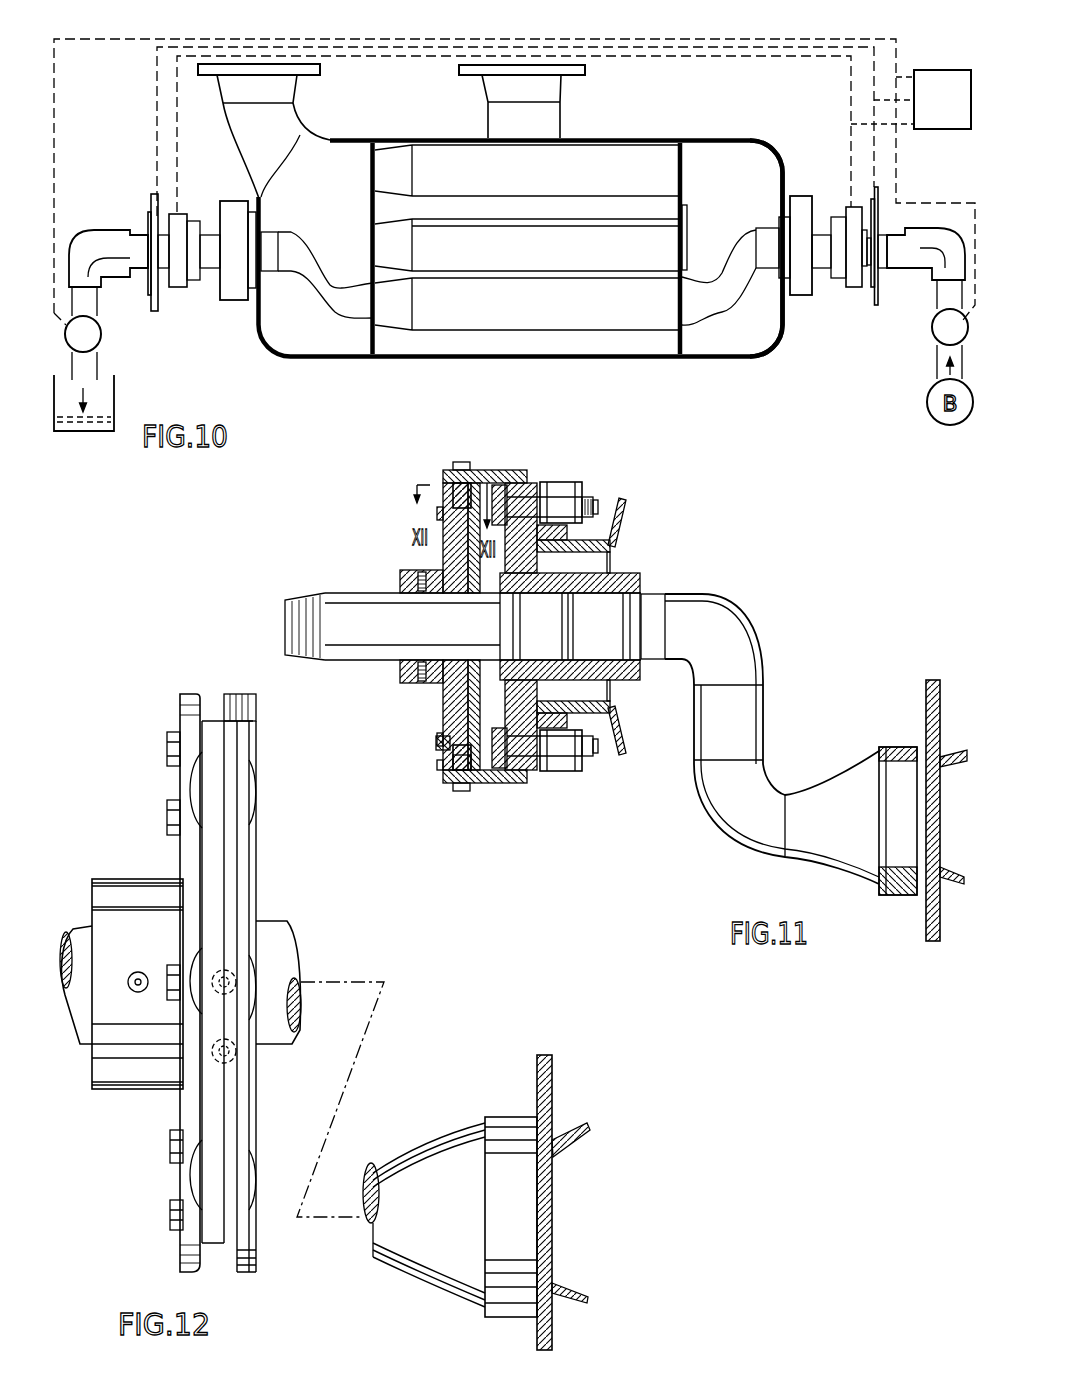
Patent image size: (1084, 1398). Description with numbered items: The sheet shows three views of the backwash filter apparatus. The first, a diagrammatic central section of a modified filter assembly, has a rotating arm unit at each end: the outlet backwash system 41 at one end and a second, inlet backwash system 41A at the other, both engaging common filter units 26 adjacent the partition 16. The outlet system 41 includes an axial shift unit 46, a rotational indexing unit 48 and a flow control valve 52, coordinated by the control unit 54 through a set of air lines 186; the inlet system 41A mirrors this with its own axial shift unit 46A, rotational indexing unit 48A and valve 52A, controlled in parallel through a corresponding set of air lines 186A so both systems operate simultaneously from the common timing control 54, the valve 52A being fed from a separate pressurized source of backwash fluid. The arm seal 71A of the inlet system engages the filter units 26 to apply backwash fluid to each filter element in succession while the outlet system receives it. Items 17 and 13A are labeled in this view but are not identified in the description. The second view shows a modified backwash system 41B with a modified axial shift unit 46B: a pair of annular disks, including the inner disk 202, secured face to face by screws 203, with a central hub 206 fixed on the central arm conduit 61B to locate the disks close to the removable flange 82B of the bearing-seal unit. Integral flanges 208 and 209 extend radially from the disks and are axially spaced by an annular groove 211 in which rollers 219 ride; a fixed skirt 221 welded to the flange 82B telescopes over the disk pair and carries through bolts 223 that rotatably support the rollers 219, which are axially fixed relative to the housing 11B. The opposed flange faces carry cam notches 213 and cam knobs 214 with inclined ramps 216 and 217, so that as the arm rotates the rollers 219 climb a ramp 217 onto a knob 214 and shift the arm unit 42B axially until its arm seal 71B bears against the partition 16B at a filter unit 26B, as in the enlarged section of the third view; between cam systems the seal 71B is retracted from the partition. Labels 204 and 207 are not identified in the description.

In FIG. 10, the set of air lines 186 is at (166, 31).
In FIG. 10, the set of air lines 186A is at (867, 27).
In FIG. 10, the control unit 54 is at (942, 99).
In FIG. 10, the rotational indexing unit 48 is at (155, 302).
In FIG. 10, the axial shift unit 46 is at (178, 286).
In FIG. 10, the flow control valve 52 is at (101, 341).
In FIG. 10, the backwash system 41 is at (214, 320).
In FIG. 10, the partition 16 is at (383, 350).
In FIG. 10, the filter units 26 is at (637, 334).
In FIG. 10, the tube sheet 17 is at (685, 359).
In FIG. 10, the arm seal 71A is at (696, 334).
In FIG. 10, the head 13A is at (770, 348).
In FIG. 10, the second backwash system 41A is at (821, 304).
In FIG. 10, the axial shift unit 46A is at (849, 278).
In FIG. 10, the rotational indexing unit 48A is at (880, 295).
In FIG. 10, the valve 52A is at (936, 334).
In FIG. 11, the modified axial shift unit 46B is at (467, 453).
In FIG. 11, the fixed skirt 221 is at (500, 468).
In FIG. 11, the removable flange 82B is at (500, 475).
In FIG. 11, the housing 11B is at (612, 496).
In FIG. 11, the through bolts 223 is at (455, 465).
In FIG. 11, the rollers 219 is at (441, 472).
In FIG. 12, the rollers 219 is at (227, 1006).
In FIG. 11, the inner annular disk 202 is at (476, 537).
In FIG. 11, the clamp ring 204 is at (457, 559).
In FIG. 11, the central arm conduit 61B is at (368, 650).
In FIG. 11, the central hub 206 is at (416, 686).
In FIG. 11, the set screw 207 is at (424, 688).
In FIG. 11, the screws 203 is at (440, 740).
In FIG. 11, the annular groove 211 is at (445, 760).
In FIG. 12, the annular groove 211 is at (232, 881).
In FIG. 11, the flange 208 is at (448, 770).
In FIG. 12, the flange 208 is at (184, 718).
In FIG. 11, the flange 209 is at (479, 784).
In FIG. 12, the flange 209 is at (246, 723).
In FIG. 11, the modified backwash system 41B is at (757, 575).
In FIG. 11, the arm unit 42B is at (768, 718).
In FIG. 12, the arm unit 42B is at (418, 1293).
In FIG. 11, the arm seal 71B is at (898, 896).
In FIG. 12, the arm seal 71B is at (517, 1307).
In FIG. 12, the partition 16B is at (543, 1327).
In FIG. 12, the filter unit 26B is at (570, 1303).
In FIG. 12, the ramps 216 is at (201, 948).
In FIG. 12, the ramps 217 is at (234, 951).
In FIG. 12, the cam knobs 214 is at (229, 982).
In FIG. 12, the cam notches 213 is at (201, 1017).